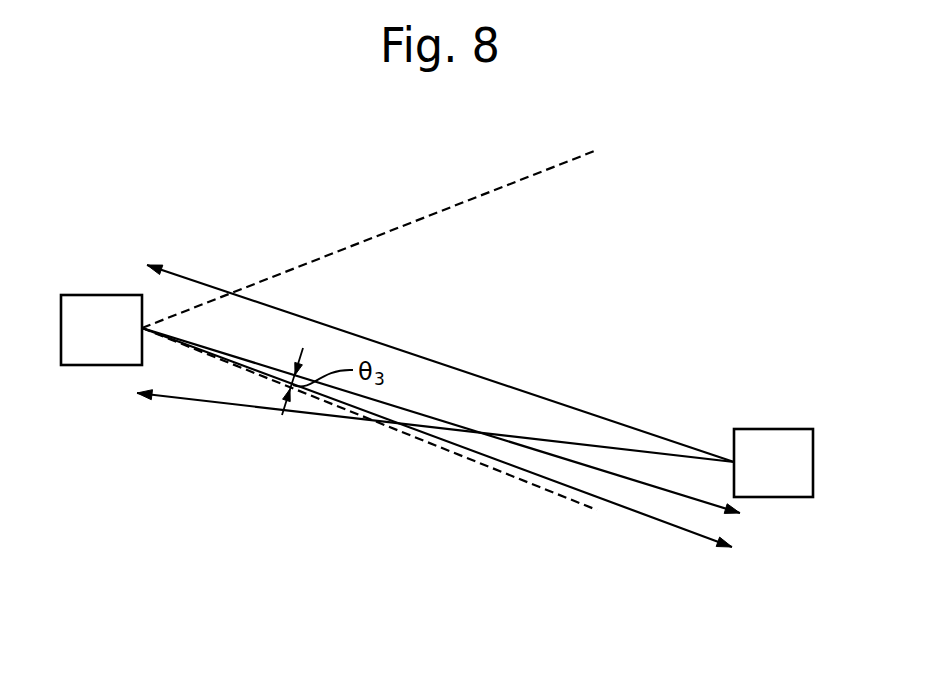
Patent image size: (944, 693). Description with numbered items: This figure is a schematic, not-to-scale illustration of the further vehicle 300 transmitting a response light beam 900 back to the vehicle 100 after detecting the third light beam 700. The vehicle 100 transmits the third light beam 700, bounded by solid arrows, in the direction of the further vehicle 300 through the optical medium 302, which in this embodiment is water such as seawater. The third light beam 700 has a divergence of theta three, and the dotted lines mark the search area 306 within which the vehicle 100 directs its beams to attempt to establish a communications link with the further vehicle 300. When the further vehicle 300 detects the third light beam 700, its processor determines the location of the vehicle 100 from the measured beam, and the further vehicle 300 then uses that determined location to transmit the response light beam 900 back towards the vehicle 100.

The vehicle 100 is at (102, 310).
The further vehicle 300 is at (780, 450).
The optical medium 302 is at (397, 153).
The search area 306 is at (517, 178).
The third light beam 700 is at (705, 505).
The response light beam 900 is at (458, 365).